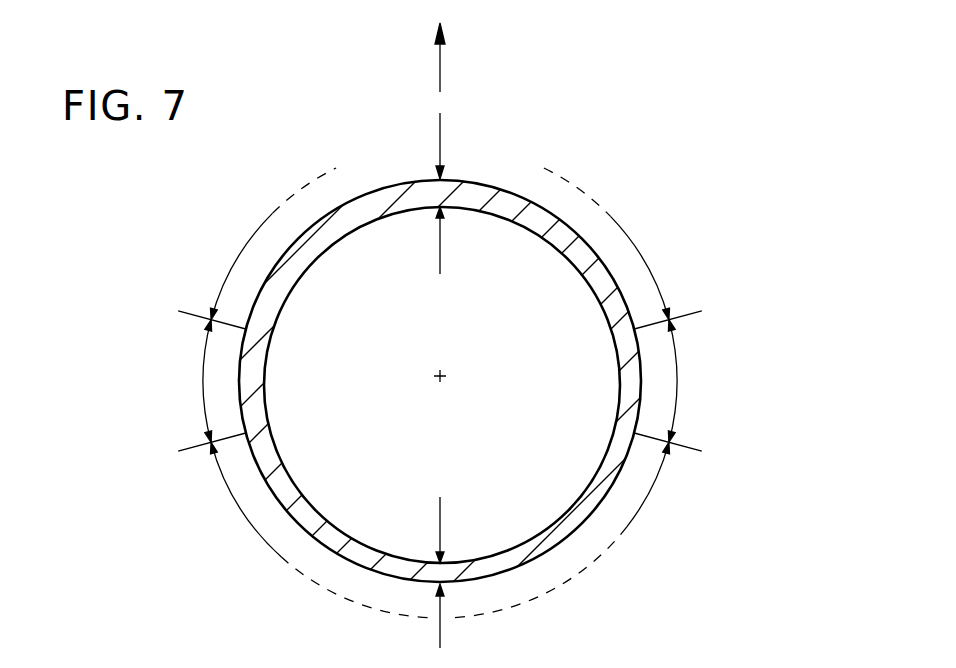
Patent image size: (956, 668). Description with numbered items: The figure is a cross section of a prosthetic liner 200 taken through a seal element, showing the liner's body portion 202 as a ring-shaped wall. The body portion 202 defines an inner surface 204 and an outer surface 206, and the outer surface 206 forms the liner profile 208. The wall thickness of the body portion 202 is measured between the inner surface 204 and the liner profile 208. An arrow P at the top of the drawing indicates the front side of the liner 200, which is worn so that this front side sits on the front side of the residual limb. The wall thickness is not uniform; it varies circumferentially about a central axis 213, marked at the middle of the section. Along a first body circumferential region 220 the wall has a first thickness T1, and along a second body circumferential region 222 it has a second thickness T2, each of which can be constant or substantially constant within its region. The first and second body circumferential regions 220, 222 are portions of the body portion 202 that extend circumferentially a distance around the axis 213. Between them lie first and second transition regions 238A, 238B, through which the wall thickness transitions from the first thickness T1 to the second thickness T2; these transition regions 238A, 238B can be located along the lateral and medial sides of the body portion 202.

The prosthetic liner 200 is at (524, 315).
The body portion 202 is at (527, 157).
The inner surface 204 is at (618, 427).
The outer surface 206 is at (440, 332).
The liner profile 208 is at (385, 184).
The axis 213 is at (433, 377).
The first body circumferential region 220 is at (238, 257).
The second body circumferential region 222 is at (245, 520).
The first transition region 238A is at (205, 380).
The second transition region 238B is at (677, 377).
The arrow indicating front side P is at (441, 64).
The first thickness T1 is at (464, 240).
The second thickness T2 is at (453, 577).